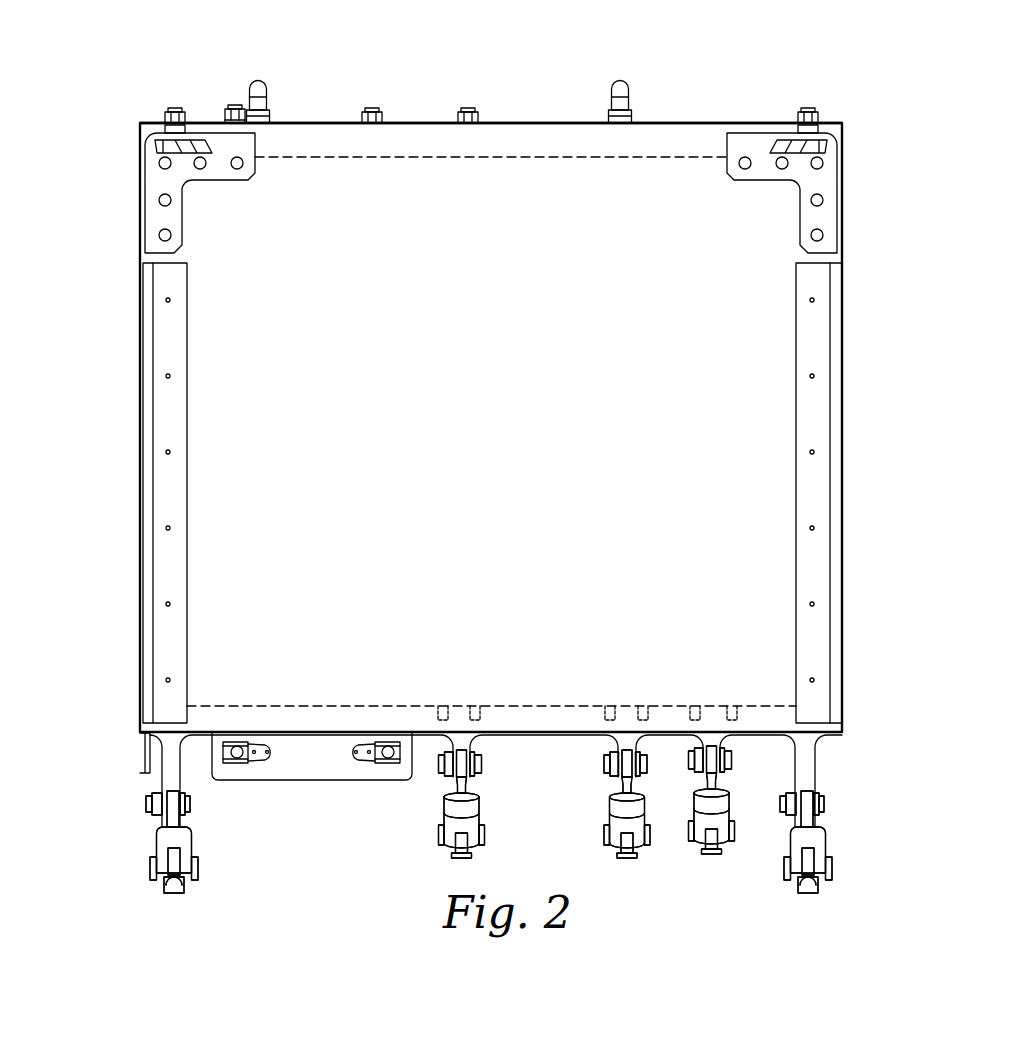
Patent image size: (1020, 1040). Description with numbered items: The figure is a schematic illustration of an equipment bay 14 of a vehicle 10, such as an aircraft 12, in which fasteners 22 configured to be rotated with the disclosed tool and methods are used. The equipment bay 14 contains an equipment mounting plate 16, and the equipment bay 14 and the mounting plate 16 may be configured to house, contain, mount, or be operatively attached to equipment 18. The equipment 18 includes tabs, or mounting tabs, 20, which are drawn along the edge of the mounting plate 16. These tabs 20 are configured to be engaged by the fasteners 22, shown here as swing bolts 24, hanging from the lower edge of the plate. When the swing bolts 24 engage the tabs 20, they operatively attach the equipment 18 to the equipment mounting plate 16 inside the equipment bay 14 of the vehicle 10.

The vehicle 10 is at (70, 80).
The aircraft 12 is at (63, 143).
The equipment bay 14 is at (65, 213).
The equipment mounting plate 16 is at (97, 330).
The equipment 18 is at (327, 157).
The tabs 20 is at (477, 708).
The fasteners 22 is at (407, 843).
The swing bolts 24 is at (157, 880).